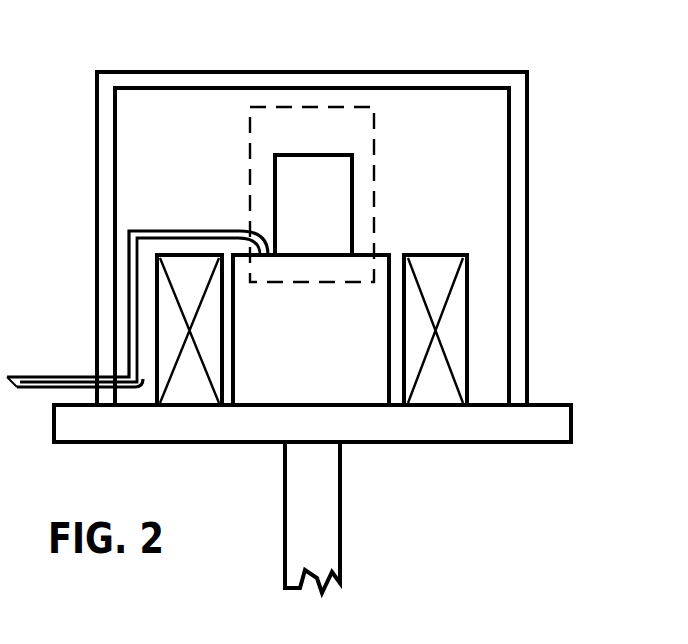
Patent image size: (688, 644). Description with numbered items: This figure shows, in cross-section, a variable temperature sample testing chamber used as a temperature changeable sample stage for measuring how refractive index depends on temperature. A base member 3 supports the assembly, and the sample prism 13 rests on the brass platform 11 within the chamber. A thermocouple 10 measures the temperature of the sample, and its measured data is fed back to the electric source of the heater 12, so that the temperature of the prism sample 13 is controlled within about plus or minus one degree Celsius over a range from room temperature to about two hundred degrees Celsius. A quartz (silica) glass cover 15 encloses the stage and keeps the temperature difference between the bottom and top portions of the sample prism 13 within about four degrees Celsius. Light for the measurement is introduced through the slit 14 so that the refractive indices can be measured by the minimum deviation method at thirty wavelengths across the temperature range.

The base plate 3 is at (574, 423).
The thermocouple 10 is at (62, 377).
The brass platform 11 is at (381, 255).
The heater 12 is at (451, 255).
The sample prism 13 is at (340, 150).
The slit 14 is at (312, 108).
The quartz (silica) glass cover 15 is at (529, 170).